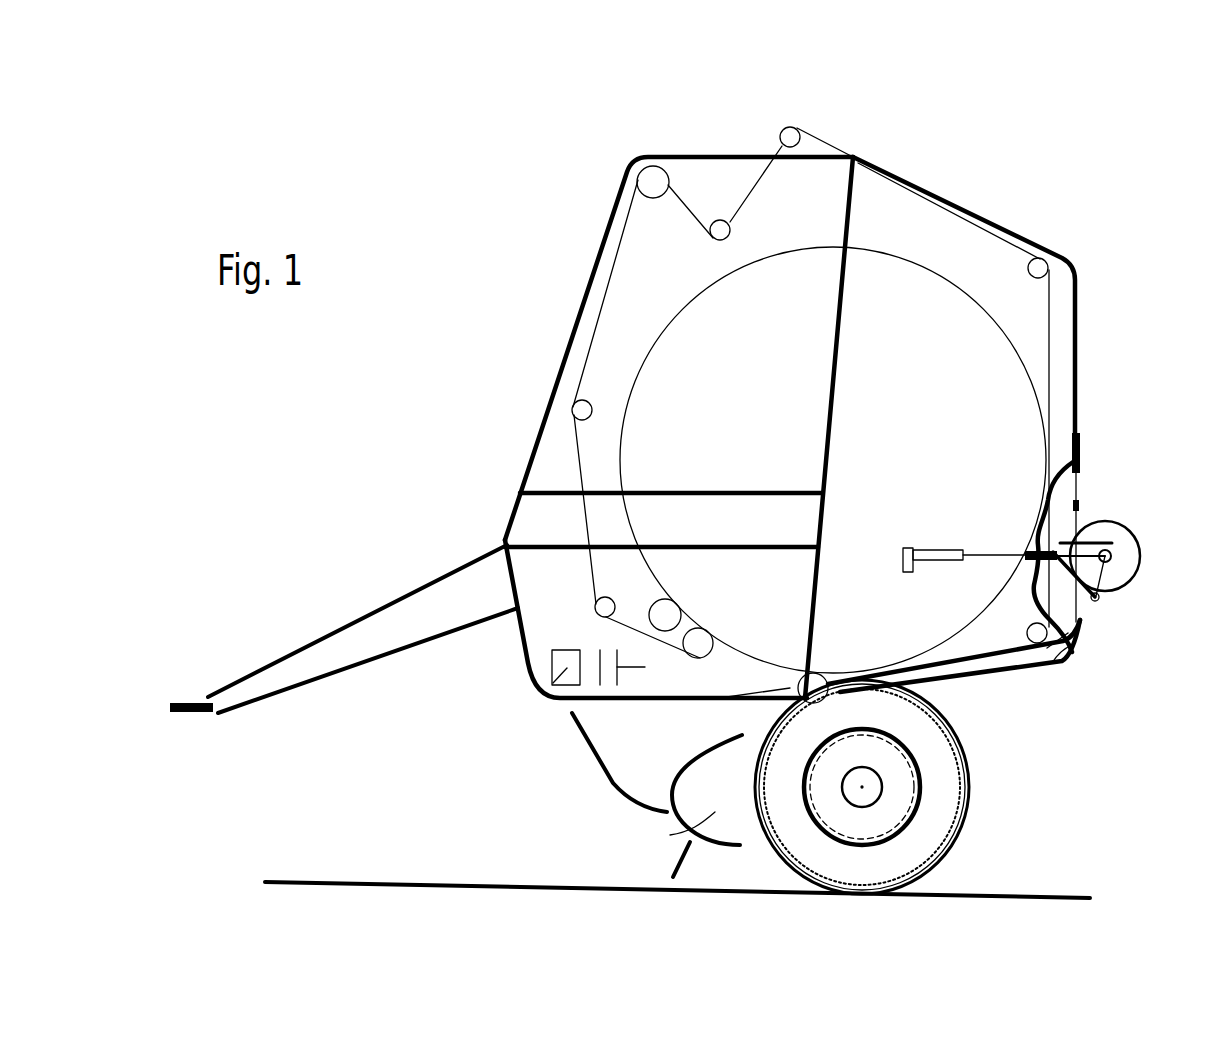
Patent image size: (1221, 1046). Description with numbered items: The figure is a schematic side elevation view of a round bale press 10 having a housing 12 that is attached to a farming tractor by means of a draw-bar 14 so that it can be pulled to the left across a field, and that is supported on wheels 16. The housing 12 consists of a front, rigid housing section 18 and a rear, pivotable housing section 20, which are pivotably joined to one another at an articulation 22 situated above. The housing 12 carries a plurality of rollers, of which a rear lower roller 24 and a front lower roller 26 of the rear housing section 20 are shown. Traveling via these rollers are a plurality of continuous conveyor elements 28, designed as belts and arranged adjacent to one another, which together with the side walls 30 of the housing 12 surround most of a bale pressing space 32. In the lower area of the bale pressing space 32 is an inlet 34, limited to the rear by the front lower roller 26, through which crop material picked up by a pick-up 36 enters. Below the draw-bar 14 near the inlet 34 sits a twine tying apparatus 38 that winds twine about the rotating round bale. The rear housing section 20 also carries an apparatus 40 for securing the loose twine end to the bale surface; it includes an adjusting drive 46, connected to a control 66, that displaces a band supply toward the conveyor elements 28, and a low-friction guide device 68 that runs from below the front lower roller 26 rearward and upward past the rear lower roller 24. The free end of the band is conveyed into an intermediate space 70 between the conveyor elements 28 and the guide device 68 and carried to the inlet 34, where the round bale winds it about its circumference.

The round bale press 10 is at (470, 240).
The housing 12 is at (863, 128).
The draw-bar 14 is at (392, 620).
The wheels 16 is at (950, 800).
The front, rigid housing section 18 is at (557, 372).
The rear, pivotable housing section 20 is at (1050, 255).
The articulation 22 is at (857, 157).
The rear lower roller 24 is at (1038, 644).
The front lower roller 26 is at (825, 680).
The conveyor elements 28 is at (1050, 378).
The side walls 30 is at (740, 398).
The bale pressing space 32 is at (888, 340).
The inlet 34 is at (783, 688).
The pick-up 36 is at (715, 812).
The twine tying apparatus 38 is at (632, 667).
The apparatus for securing the loose twine end 40 is at (1138, 631).
The adjusting drive 46 is at (925, 550).
The control 66 is at (553, 683).
The guide device 68 is at (890, 695).
The intermediate space 70 is at (1052, 663).